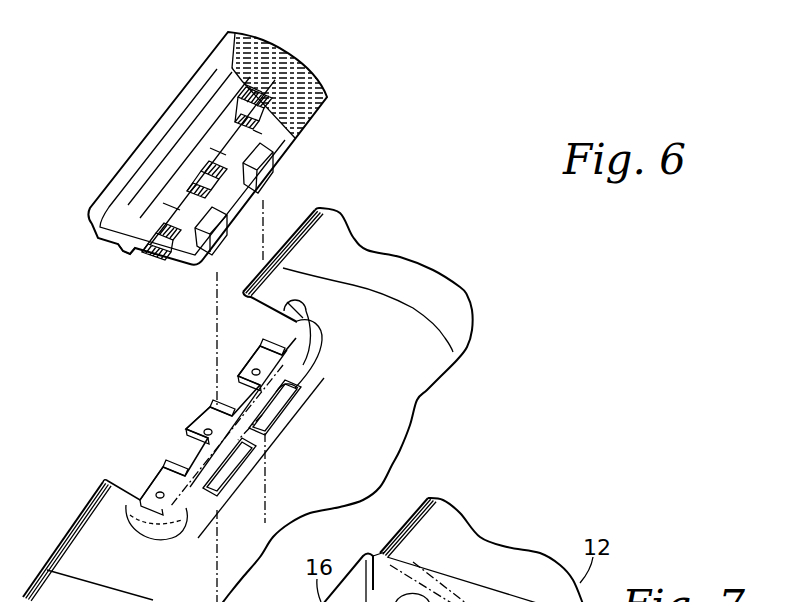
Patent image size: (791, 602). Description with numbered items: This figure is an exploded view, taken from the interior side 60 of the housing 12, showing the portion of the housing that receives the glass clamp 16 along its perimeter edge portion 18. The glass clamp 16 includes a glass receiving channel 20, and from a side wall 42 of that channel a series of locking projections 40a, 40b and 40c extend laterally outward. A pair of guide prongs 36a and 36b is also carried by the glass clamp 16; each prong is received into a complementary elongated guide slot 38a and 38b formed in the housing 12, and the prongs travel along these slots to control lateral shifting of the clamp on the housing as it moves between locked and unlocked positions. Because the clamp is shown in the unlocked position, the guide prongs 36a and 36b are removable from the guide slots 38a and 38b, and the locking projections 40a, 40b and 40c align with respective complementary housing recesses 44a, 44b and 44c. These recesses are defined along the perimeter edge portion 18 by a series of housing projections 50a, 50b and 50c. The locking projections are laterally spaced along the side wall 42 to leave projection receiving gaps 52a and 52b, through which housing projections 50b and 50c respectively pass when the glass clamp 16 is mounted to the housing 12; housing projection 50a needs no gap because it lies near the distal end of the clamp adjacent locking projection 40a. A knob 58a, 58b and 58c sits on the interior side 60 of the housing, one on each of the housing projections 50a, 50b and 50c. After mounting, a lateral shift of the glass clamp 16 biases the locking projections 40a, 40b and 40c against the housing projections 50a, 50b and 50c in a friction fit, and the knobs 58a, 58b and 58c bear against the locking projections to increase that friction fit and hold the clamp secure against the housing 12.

The housing 12 is at (466, 294).
The glass clamp 16 is at (210, 54).
The perimeter edge portion 18 is at (112, 437).
The glass receiving channel 20 is at (123, 250).
The guide prong 36a is at (264, 165).
The guide prong 36b is at (200, 252).
The elongated guide slot 38a is at (284, 418).
The elongated guide slot 38b is at (224, 472).
The locking projection 40a is at (155, 257).
The locking projection 40b is at (213, 180).
The locking projection 40c is at (322, 108).
The side wall 42 is at (260, 125).
The housing recess 44a is at (176, 525).
The housing recess 44b is at (280, 394).
The housing recess 44c is at (280, 333).
The housing projection 50a is at (153, 480).
The housing projection 50b is at (196, 423).
The housing projection 50c is at (237, 367).
The projection receiving gap 52a is at (170, 207).
The projection receiving gap 52b is at (217, 152).
The knob 58a is at (150, 505).
The knob 58b is at (199, 439).
The knob 58c is at (250, 388).
The interior side 60 is at (348, 272).